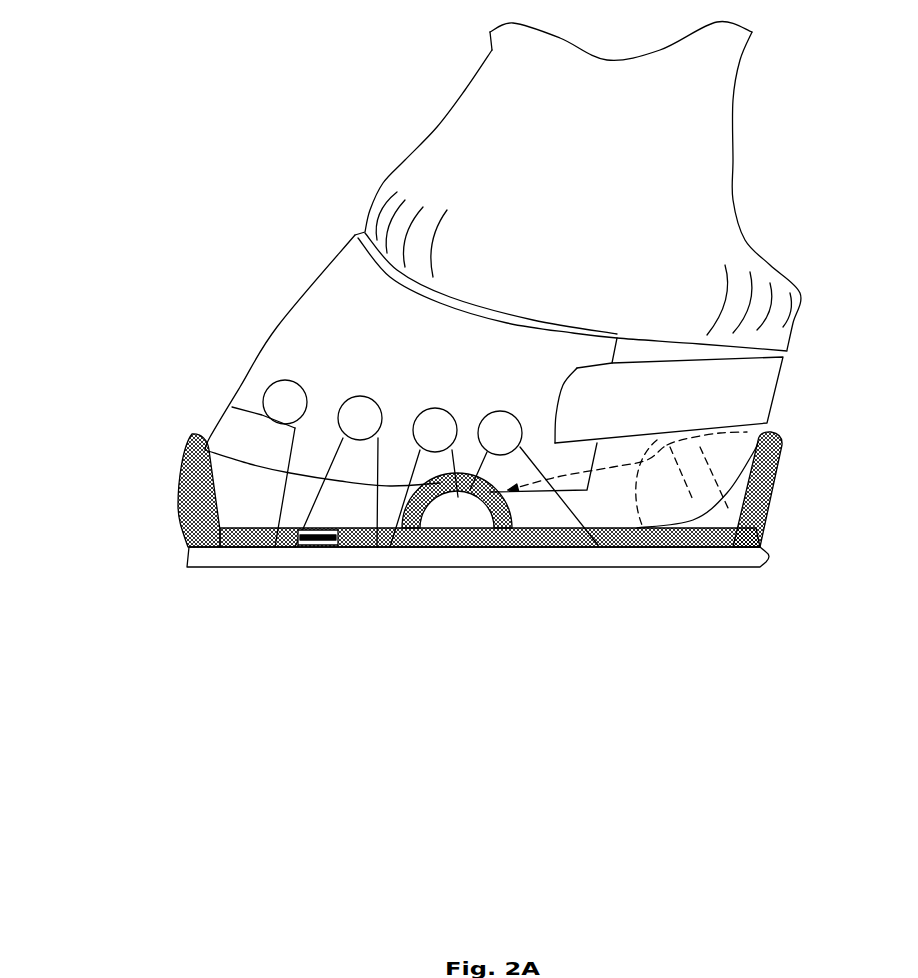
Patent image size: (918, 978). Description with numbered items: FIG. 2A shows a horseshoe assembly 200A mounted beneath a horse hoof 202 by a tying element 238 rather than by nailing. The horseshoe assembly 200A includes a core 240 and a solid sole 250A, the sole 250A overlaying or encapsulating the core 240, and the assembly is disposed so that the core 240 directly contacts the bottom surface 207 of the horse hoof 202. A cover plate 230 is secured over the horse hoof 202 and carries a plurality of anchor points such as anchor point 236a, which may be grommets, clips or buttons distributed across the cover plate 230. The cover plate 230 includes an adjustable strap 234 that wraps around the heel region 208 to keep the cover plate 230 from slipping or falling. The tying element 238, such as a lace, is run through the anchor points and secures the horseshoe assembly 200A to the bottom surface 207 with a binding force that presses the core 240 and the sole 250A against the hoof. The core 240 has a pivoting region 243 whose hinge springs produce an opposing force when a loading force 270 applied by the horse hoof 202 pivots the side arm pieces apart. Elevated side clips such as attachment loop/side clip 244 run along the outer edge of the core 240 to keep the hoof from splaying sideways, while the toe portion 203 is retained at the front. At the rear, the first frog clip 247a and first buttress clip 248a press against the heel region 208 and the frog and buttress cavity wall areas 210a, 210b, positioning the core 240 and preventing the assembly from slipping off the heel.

The horseshoe assembly mounting (solid sole) 200A is at (105, 492).
The horse hoof 202 is at (283, 258).
The toe portion 203 is at (205, 450).
The bottom surface 207 is at (613, 625).
The heel region 208 is at (785, 353).
The frog cavity wall area 210a is at (690, 514).
The buttress cavity wall area 210b is at (625, 514).
The cover plate 230 is at (277, 327).
The strap (adjustable) 234 is at (787, 393).
The anchor point 236a is at (353, 400).
The tying element 238 is at (248, 408).
The core 240 is at (527, 547).
The pivoting region 243 is at (312, 547).
The attachment loop/side clip 244 is at (433, 512).
The first frog clip 247a is at (703, 497).
The first buttress clip 248a is at (773, 497).
The sole (solid) 250A is at (265, 567).
The loading force 270 is at (535, 513).